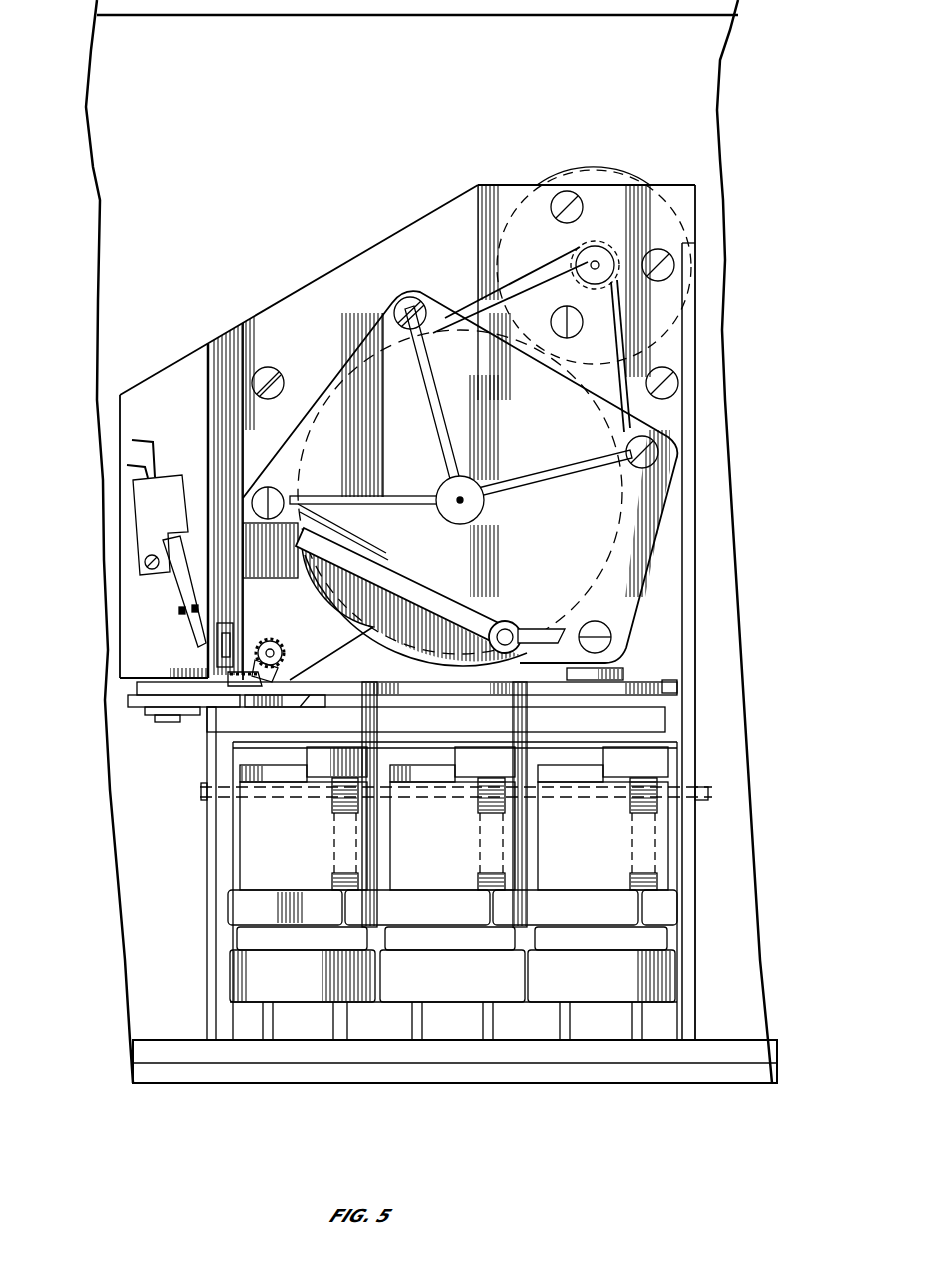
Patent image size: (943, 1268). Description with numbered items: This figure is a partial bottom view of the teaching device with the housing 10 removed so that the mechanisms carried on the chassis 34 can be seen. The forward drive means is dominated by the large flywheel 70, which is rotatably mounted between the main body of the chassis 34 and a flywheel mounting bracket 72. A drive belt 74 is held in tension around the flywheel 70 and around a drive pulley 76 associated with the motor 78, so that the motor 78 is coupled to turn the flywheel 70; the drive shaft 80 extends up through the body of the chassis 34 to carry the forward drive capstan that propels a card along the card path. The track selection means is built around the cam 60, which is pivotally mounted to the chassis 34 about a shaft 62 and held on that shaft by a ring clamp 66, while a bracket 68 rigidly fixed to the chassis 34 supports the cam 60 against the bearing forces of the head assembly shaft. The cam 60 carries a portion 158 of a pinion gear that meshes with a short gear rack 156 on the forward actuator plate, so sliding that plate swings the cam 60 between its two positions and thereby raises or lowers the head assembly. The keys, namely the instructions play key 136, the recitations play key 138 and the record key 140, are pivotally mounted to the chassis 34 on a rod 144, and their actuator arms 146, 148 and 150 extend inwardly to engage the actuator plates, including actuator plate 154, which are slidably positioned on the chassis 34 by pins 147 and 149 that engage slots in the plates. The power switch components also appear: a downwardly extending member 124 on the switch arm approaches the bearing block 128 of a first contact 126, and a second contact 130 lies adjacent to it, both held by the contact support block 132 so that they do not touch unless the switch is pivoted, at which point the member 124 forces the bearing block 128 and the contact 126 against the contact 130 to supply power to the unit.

The housing 10 is at (728, 71).
The chassis 34 is at (416, 222).
The cam 60 is at (380, 566).
The shaft 62 is at (274, 641).
The ring clamp 66 is at (245, 650).
The bracket 68 is at (335, 520).
The flywheel 70 is at (368, 326).
The flywheel mounting bracket 72 is at (388, 292).
The drive belt 74 is at (531, 278).
The drive pulley 76 is at (595, 246).
The motor 78 is at (620, 170).
The drive shaft 80 is at (462, 490).
The downwardly extending member 124 is at (213, 690).
The first contact 126 is at (199, 602).
The bearing block 128 is at (216, 641).
The second contact 130 is at (180, 612).
The contact support block 132 is at (170, 472).
The instructions play key 136 is at (306, 872).
The recitations play key 138 is at (451, 872).
The record key 140 is at (603, 818).
The rod 144 is at (614, 798).
The actuator arm 146 is at (376, 722).
The pin 147 is at (590, 712).
The actuator arm 148 is at (512, 727).
The pin 149 is at (165, 720).
The actuator arm 150 is at (668, 722).
The actuator plate 154 is at (649, 690).
The gear rack 156 is at (224, 700).
The pinion gear portion 158 is at (272, 664).